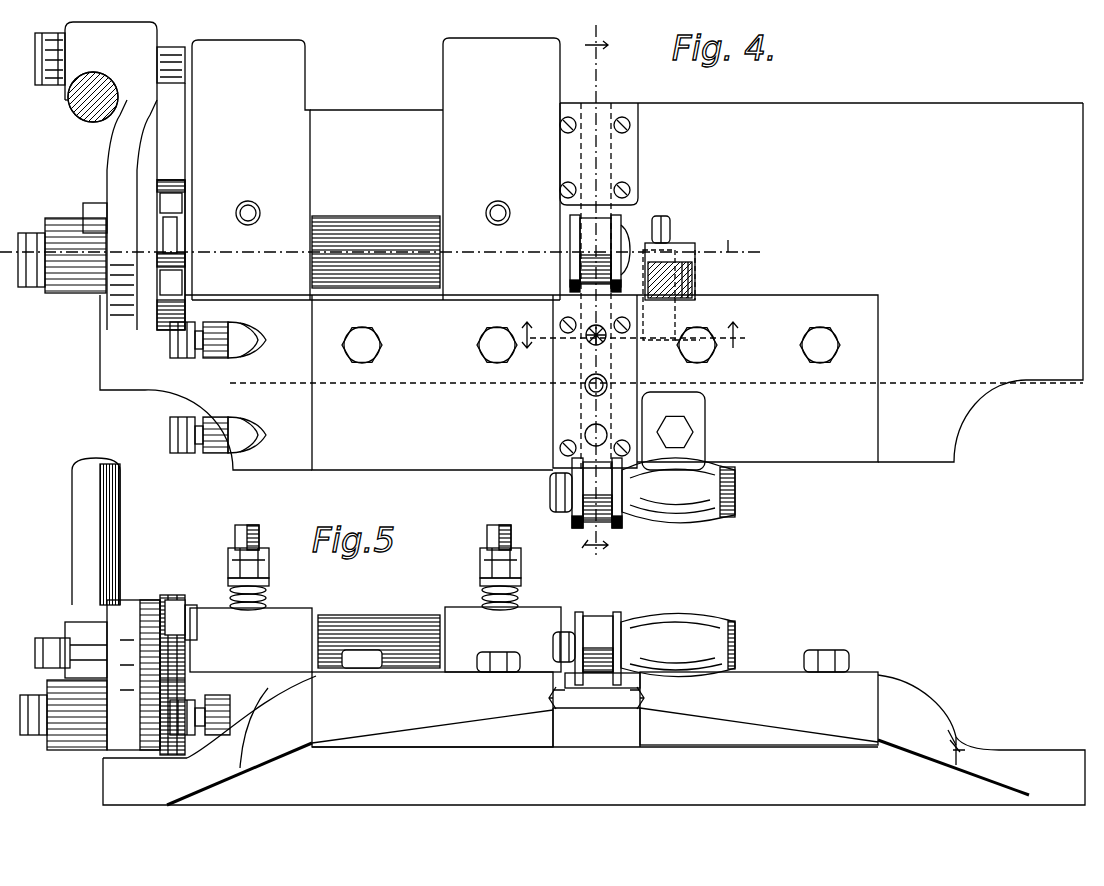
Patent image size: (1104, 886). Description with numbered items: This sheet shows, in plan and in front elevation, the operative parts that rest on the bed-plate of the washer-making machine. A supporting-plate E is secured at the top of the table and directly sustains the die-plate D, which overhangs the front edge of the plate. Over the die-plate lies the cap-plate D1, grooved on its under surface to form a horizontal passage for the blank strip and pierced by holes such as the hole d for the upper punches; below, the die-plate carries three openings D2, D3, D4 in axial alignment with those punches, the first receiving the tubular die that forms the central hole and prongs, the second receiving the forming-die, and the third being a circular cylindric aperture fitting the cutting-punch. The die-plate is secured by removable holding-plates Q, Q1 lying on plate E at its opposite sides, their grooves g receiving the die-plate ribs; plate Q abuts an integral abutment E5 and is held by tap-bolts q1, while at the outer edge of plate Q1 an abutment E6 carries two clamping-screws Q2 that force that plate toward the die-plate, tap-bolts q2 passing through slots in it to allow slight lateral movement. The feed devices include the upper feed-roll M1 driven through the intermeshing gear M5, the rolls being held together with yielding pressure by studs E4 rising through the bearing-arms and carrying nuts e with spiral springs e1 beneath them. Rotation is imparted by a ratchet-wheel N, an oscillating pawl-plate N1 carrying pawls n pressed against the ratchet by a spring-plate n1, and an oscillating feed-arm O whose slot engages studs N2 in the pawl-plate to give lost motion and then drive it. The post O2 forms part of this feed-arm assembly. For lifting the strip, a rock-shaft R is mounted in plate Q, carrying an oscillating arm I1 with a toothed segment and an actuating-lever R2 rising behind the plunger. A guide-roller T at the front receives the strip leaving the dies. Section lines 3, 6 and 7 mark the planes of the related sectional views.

In FIG. 4, the bracket post O2 is at (125, 72).
In FIG. 5, the bracket post O2 is at (88, 513).
In FIG. 4, the oscillating feed-arm O is at (146, 206).
In FIG. 5, the oscillating feed-arm O is at (133, 675).
In FIG. 4, the studs N2 is at (88, 270).
In FIG. 5, the studs N2 is at (102, 658).
In FIG. 4, the oscillating pawl-plate N1 is at (150, 180).
In FIG. 5, the oscillating pawl-plate N1 is at (165, 605).
In FIG. 4, the ratchet-wheel N is at (183, 185).
In FIG. 5, the ratchet-wheel N is at (188, 686).
In FIG. 4, the pawls n is at (178, 212).
In FIG. 5, the pawls n is at (188, 643).
In FIG. 4, the spring-plate n1 is at (172, 240).
In FIG. 5, the spring-plate n1 is at (182, 610).
In FIG. 4, the studs E4 is at (248, 210).
In FIG. 5, the studs E4 is at (236, 536).
In FIG. 4, the nuts e is at (262, 216).
In FIG. 5, the nuts e is at (262, 563).
In FIG. 5, the spiral springs e1 is at (264, 597).
In FIG. 4, the gear M5 is at (385, 230).
In FIG. 5, the gear M5 is at (366, 626).
In FIG. 4, the upper feed-roll M1 is at (600, 238).
In FIG. 4, the actuating-lever R2 is at (697, 272).
In FIG. 4, the rock-shaft R is at (672, 330).
In FIG. 4, the oscillating arm I1 is at (640, 342).
In FIG. 4, the section line 6 6 is at (733, 247).
In FIG. 4, the section line 7 7 is at (741, 338).
In FIG. 4, the section line 3 3 is at (595, 293).
In FIG. 4, the tap-bolts q2 is at (478, 350).
In FIG. 5, the tap-bolts q2 is at (497, 660).
In FIG. 4, the tap-bolts q1 is at (812, 347).
In FIG. 5, the tap-bolts q1 is at (827, 660).
In FIG. 4, the holding-plate Q1 is at (369, 382).
In FIG. 5, the holding-plate Q1 is at (432, 709).
In FIG. 4, the holding-plate Q is at (757, 382).
In FIG. 5, the holding-plate Q is at (759, 708).
In FIG. 4, the clamping-screws Q2 is at (178, 432).
In FIG. 5, the clamping-screws Q2 is at (195, 700).
In FIG. 4, the abutment E5 is at (980, 282).
In FIG. 5, the abutment E5 is at (921, 720).
In FIG. 4, the abutment E6 is at (206, 382).
In FIG. 5, the abutment E6 is at (251, 722).
In FIG. 4, the cap-plate D1 is at (568, 412).
In FIG. 5, the cap-plate D1 is at (631, 675).
In FIG. 4, the aperture D2 is at (588, 340).
In FIG. 4, the opening D3 is at (587, 389).
In FIG. 4, the aperture D4 is at (605, 432).
In FIG. 4, the guide-roller T is at (628, 540).
In FIG. 5, the guide-roller T is at (598, 622).
In FIG. 5, the die-plate D is at (596, 717).
In FIG. 5, the hole d is at (550, 698).
In FIG. 5, the gib g is at (604, 701).
In FIG. 5, the supporting-plate E is at (594, 756).